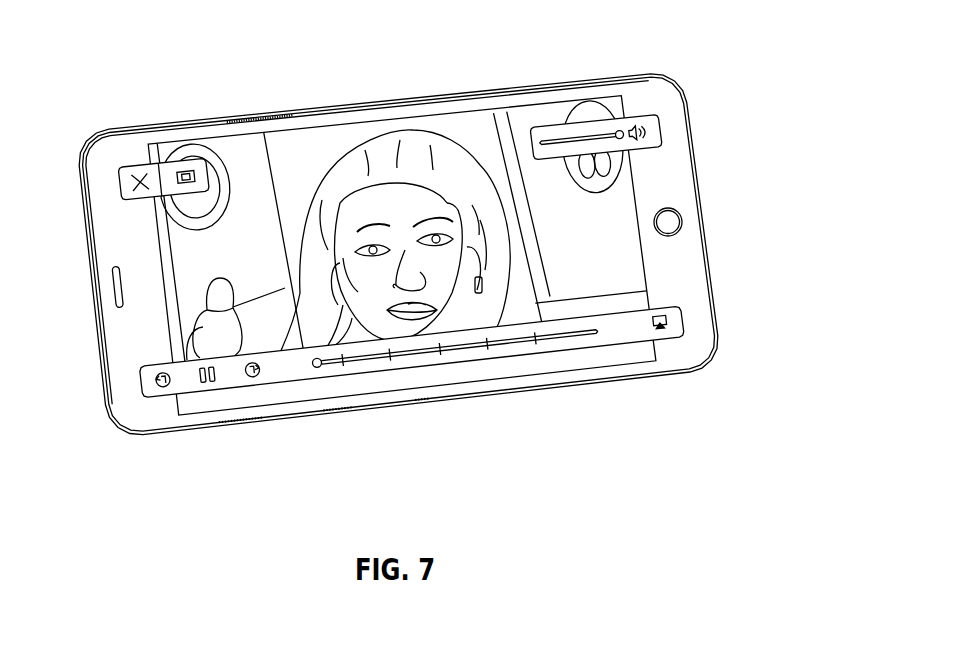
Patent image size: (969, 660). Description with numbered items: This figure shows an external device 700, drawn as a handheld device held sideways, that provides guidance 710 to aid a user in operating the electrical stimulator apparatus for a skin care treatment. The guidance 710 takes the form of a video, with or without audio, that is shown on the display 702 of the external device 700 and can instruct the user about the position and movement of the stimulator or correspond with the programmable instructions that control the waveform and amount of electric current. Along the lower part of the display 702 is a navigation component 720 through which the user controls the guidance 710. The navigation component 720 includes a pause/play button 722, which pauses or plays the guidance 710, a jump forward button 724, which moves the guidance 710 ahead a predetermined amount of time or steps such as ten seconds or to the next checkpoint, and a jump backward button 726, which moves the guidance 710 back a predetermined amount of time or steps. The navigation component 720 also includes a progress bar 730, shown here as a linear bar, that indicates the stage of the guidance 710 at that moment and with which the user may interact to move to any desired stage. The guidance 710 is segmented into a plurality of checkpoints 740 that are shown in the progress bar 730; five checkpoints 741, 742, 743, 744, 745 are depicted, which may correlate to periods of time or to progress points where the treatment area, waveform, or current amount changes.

The external device 700 is at (680, 35).
The display 702 is at (688, 214).
The guidance 710 is at (380, 127).
The navigation component 720 is at (359, 403).
The pause/play button 722 is at (212, 385).
The jump forward button 724 is at (254, 378).
The jump backward button 726 is at (164, 388).
The progress bar 730 is at (320, 368).
The checkpoints 740 is at (480, 425).
The first checkpoint 741 is at (343, 366).
The second checkpoint 742 is at (391, 361).
The third checkpoint 743 is at (441, 355).
The fourth checkpoint 744 is at (488, 350).
The fifth checkpoint 745 is at (536, 344).